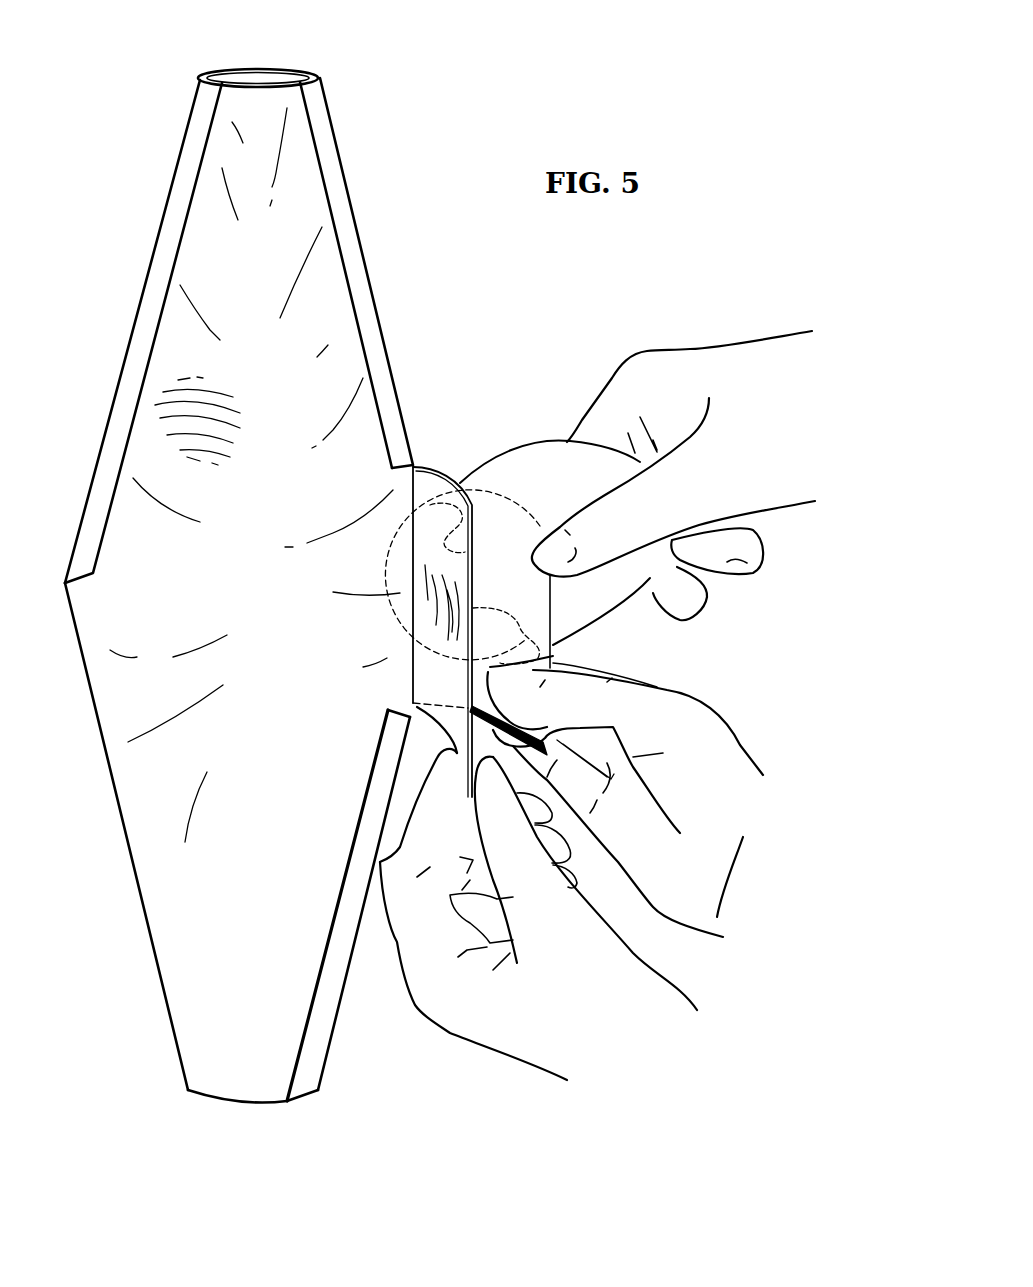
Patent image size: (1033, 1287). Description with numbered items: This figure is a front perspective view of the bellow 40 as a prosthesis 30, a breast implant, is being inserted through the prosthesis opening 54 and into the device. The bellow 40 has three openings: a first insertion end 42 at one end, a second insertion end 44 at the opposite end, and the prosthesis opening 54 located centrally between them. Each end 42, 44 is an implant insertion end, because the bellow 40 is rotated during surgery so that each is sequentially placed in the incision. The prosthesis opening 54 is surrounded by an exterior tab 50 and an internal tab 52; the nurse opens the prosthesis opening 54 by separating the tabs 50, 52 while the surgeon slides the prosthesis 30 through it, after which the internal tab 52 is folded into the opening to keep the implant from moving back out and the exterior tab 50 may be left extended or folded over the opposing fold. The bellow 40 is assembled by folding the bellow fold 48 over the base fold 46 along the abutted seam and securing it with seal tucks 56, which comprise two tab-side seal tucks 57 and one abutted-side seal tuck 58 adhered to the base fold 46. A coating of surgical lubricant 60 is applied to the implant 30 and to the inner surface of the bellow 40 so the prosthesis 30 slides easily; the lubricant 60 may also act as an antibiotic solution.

The prosthesis 30 is at (527, 443).
The bellow 40 is at (239, 574).
The first insertion end 42 is at (260, 46).
The second insertion end 44 is at (210, 1098).
The base fold 46 is at (113, 792).
The bellow fold 48 is at (245, 76).
The exterior tab 50 is at (540, 724).
The internal tab 52 is at (427, 468).
The prosthesis opening 54 is at (489, 517).
The seal tucks 56 is at (157, 252).
The tab-side seal tucks 57 is at (340, 181).
The abutted-side seal tuck 58 is at (137, 331).
The surgical lubricant 60 is at (522, 615).